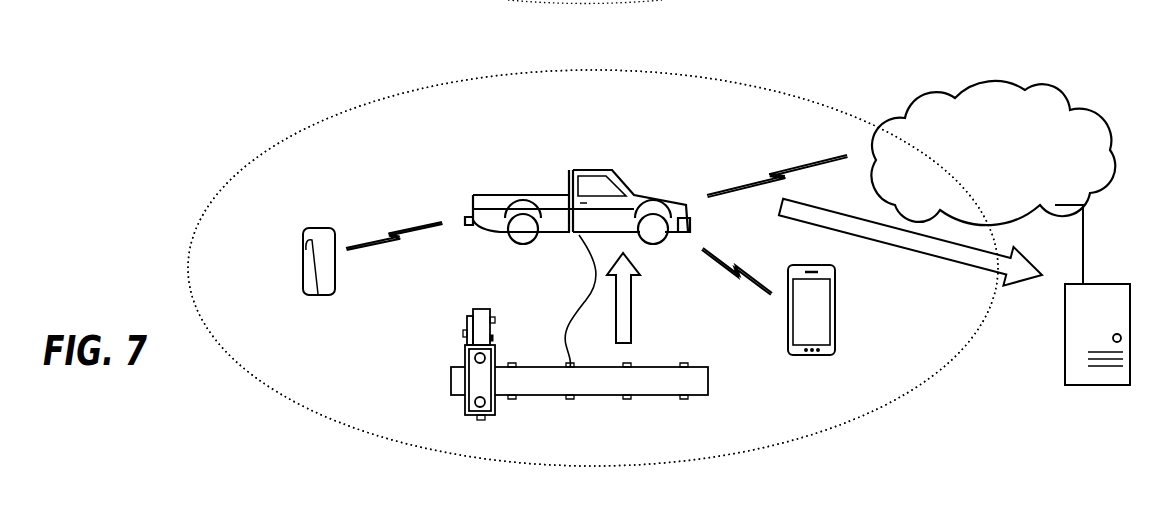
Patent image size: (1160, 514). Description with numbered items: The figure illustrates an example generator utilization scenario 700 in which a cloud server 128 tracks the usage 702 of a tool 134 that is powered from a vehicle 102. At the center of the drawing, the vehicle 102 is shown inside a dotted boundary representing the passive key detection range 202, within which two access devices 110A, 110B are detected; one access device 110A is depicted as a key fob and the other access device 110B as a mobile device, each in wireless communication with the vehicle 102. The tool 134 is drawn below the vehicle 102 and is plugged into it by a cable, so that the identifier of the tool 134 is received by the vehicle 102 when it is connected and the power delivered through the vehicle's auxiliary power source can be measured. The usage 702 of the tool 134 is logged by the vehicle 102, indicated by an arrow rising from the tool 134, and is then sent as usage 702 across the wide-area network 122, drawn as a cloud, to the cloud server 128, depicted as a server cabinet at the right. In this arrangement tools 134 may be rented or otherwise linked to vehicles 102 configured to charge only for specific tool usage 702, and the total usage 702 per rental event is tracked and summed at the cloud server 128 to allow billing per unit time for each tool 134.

The generator utilization scenario 700 is at (132, 38).
The passive key detection range 202 is at (366, 173).
The vehicle 102 is at (569, 261).
The access device 110A is at (341, 325).
The access device 110B is at (828, 390).
The tool 134 is at (596, 433).
The usage 702 is at (929, 325).
The wide-area network 122 is at (1018, 198).
The cloud server 128 is at (1044, 425).